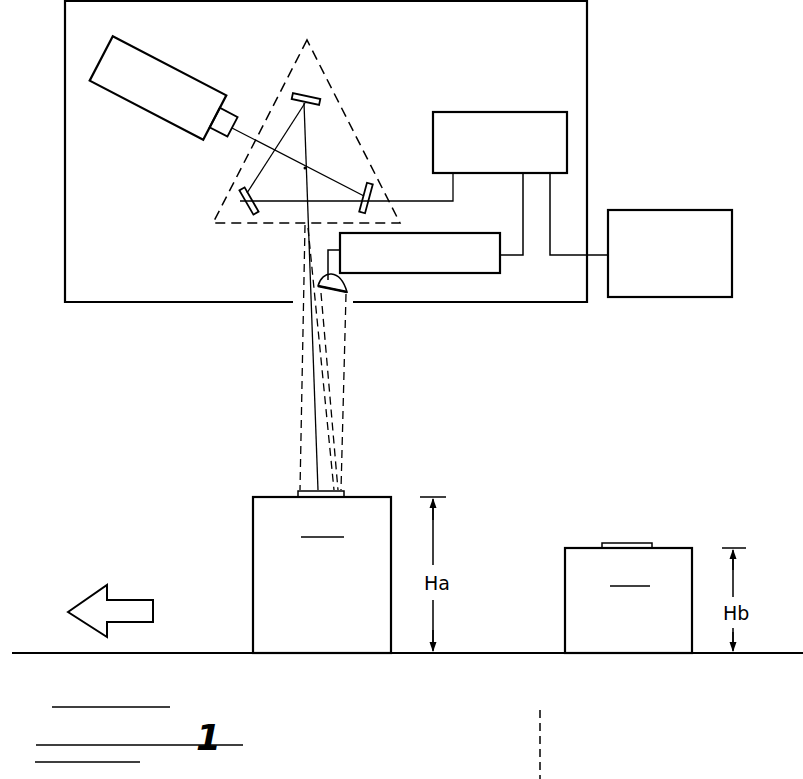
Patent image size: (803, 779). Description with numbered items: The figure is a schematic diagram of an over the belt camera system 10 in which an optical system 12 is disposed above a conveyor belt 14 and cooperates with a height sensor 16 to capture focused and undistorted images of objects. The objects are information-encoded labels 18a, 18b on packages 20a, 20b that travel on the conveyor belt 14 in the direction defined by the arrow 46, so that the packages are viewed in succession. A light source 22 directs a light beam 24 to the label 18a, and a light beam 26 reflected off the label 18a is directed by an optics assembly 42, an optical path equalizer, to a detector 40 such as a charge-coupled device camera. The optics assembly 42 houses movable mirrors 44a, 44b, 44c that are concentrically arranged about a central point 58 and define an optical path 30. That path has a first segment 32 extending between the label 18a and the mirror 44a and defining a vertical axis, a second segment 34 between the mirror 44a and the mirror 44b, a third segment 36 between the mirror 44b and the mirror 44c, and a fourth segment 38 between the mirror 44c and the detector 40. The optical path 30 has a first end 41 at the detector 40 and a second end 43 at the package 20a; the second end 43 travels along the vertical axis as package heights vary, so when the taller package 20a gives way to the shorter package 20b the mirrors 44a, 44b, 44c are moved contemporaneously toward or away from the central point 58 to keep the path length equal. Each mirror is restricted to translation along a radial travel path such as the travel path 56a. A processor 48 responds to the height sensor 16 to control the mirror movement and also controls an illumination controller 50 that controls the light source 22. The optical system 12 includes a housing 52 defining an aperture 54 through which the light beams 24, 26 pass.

The over the belt camera system 10 is at (682, 108).
The optical system 12 is at (596, 67).
The conveyor belt 14 is at (38, 652).
The height sensor 16 is at (655, 298).
The label 18a is at (347, 491).
The label 18b is at (652, 543).
The package 20a is at (322, 575).
The package 20b is at (628, 600).
The light source 22 is at (344, 282).
The light beam 24 is at (343, 373).
The light beam 26 is at (303, 368).
The optical path 30 is at (324, 116).
The first segment 32 is at (311, 330).
The second segment 34 is at (265, 170).
The third segment 36 is at (284, 205).
The fourth segment 38 is at (326, 172).
The detector 40 is at (138, 49).
The first end 41 is at (222, 134).
The optics assembly 42 is at (381, 77).
The second end 43 is at (317, 490).
The mirror 44a is at (311, 92).
The mirror 44b is at (240, 203).
The mirror 44c is at (378, 202).
The arrow 46 is at (128, 600).
The processor 48 is at (518, 112).
The illumination controller 50 is at (476, 275).
The housing 52 is at (65, 192).
The aperture 54 is at (288, 312).
The travel path 56a is at (540, 728).
The central point 58 is at (304, 169).